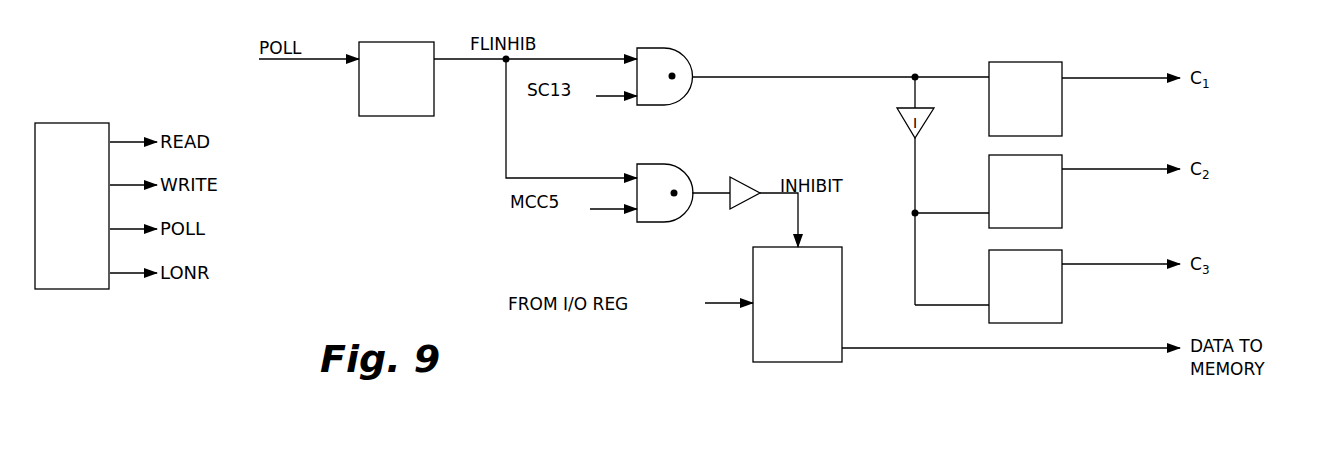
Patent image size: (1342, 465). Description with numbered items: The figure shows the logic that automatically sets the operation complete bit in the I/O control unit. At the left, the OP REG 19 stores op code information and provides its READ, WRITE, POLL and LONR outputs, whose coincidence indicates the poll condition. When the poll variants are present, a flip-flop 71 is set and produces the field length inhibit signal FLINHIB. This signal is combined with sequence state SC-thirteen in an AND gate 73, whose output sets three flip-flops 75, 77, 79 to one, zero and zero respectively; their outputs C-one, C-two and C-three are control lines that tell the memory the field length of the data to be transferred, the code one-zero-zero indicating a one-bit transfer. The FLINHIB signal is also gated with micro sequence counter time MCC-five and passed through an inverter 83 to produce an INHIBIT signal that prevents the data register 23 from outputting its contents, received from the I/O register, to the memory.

The op code register 19 is at (83, 123).
The flip-flop 71 is at (359, 108).
The AND gate 73 is at (688, 63).
The inverter 83 is at (757, 163).
The data register 23 is at (826, 247).
The flip-flop 75 is at (1063, 68).
The flip-flop 77 is at (1063, 162).
The flip-flop 79 is at (1063, 256).